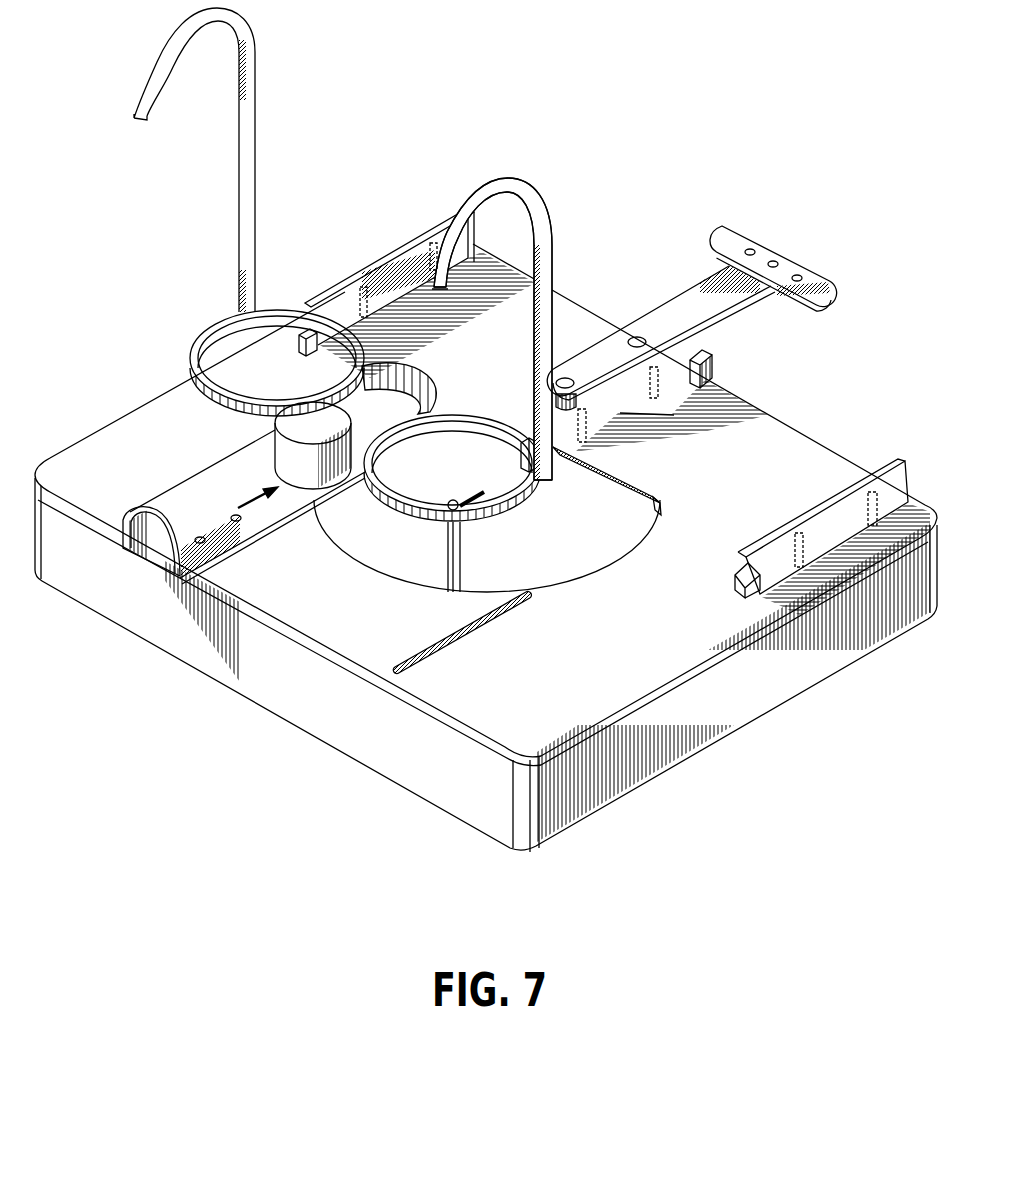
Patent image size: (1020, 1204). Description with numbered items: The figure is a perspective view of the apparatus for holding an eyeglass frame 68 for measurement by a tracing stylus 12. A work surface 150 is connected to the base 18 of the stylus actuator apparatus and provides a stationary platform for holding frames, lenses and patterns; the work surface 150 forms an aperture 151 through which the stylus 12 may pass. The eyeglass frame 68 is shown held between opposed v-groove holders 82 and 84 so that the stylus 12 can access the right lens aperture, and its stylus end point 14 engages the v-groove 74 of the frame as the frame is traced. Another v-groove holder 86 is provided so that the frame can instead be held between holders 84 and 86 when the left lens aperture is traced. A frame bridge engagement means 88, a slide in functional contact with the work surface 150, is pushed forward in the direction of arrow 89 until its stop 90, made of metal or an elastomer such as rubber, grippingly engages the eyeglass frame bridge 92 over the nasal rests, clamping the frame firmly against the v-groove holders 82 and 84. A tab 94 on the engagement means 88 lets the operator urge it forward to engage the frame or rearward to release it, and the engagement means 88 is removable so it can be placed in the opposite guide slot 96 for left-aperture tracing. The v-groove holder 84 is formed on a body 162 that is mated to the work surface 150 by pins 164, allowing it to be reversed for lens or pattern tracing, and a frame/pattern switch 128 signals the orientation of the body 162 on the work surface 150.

The stylus 12 is at (458, 502).
The stylus end point 14 is at (482, 495).
The base 18 is at (822, 676).
The eyeglass frame 68 is at (190, 350).
The v-groove 74 is at (462, 428).
The v-groove holder 82 is at (305, 298).
The v-groove holder 84 is at (560, 455).
The v-groove holder 86 is at (748, 590).
The frame bridge engagement means 88 is at (220, 486).
The arrow 89 is at (262, 505).
The stop 90 is at (296, 436).
The eyeglass frame bridge 92 is at (387, 368).
The tab 94 is at (157, 558).
The guide slot 96 is at (445, 652).
The frame/pattern switch 128 is at (714, 374).
The work surface 150 is at (577, 673).
The aperture 151 is at (507, 576).
The body 162 is at (706, 420).
The pins 164 is at (587, 428).